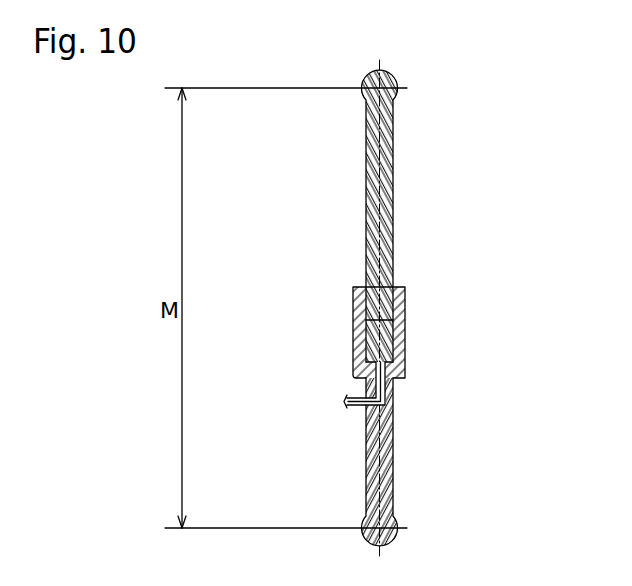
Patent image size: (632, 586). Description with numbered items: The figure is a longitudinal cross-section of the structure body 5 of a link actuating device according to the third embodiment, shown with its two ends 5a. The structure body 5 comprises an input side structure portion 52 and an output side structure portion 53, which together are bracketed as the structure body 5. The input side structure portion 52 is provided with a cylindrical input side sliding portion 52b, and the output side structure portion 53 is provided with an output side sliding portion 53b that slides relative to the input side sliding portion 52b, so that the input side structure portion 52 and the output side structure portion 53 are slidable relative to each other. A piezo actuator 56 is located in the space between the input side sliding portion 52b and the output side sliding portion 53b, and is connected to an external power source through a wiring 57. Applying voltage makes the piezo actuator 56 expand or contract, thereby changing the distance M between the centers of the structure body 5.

The structure body 5 is at (416, 310).
The ball end of connecting rod 5a is at (391, 74).
The output side structure portion 53 is at (400, 216).
The output side sliding portion 53b is at (376, 292).
The input side structure portion 52 is at (410, 416).
The input side sliding portion 52b is at (352, 360).
The piezo actuator 56 is at (375, 330).
The wiring 57 is at (353, 410).